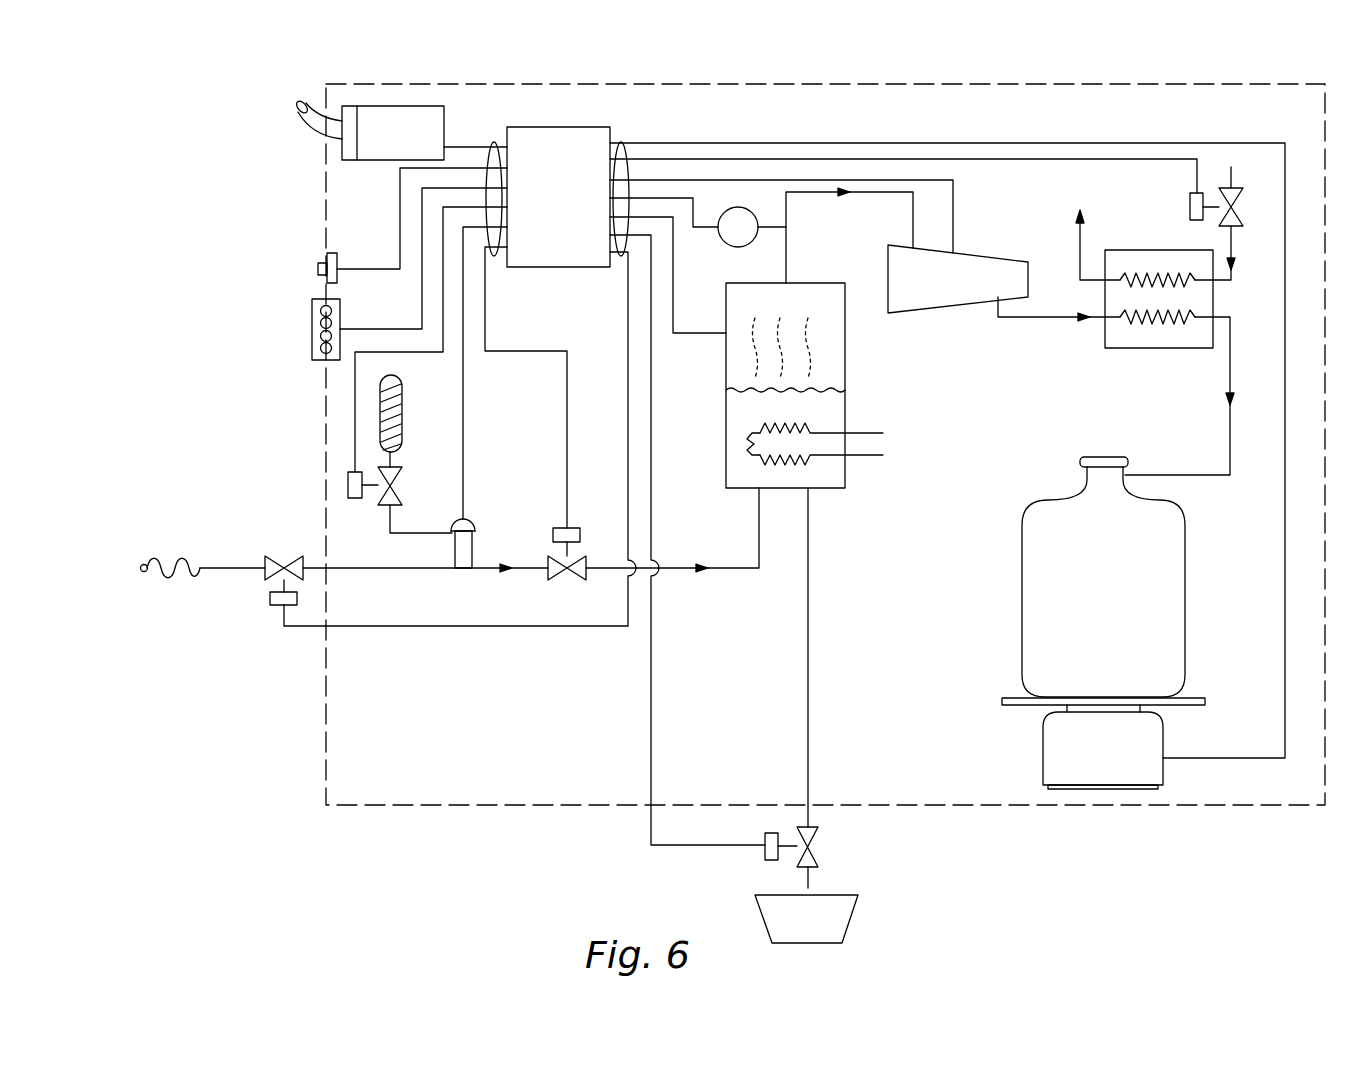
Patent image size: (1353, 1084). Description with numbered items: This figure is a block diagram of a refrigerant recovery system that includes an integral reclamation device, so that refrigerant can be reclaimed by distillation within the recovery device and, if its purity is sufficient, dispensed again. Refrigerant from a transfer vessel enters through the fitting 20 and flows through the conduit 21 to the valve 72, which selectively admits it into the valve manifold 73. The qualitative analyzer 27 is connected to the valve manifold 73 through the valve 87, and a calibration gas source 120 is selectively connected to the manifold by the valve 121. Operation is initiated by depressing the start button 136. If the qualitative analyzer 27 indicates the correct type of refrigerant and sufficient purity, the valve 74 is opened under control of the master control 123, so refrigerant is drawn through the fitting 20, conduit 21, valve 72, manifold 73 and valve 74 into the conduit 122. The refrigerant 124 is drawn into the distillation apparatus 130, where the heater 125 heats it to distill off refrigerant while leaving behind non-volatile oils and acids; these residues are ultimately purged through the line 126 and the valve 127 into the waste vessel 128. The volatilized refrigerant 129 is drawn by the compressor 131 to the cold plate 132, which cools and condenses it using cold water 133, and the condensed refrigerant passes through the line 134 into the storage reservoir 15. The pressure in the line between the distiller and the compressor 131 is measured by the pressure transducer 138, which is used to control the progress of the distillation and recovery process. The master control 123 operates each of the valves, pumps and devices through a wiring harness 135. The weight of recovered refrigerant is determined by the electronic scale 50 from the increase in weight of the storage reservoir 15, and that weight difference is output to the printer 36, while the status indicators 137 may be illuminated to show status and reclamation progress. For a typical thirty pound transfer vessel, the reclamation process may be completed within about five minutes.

The storage reservoir 15 is at (1092, 624).
The fitting 20 is at (144, 573).
The conduit 21 is at (222, 575).
The qualitative analyzer 27 is at (471, 516).
The printer 36 is at (384, 161).
The electronic scale 50 is at (1092, 766).
The valve 72 is at (262, 588).
The valve manifold 73 is at (472, 558).
The valve 74 is at (558, 580).
The valve 87 is at (458, 538).
The calibration gas source 120 is at (402, 405).
The valve 121 is at (402, 478).
The conduit 122 is at (671, 570).
The master control 123 is at (544, 237).
The refrigerant 124 is at (769, 417).
The heater 125 is at (866, 433).
The line 126 is at (808, 590).
The valve 127 is at (815, 848).
The waste vessel 128 is at (856, 920).
The volatilized refrigerant 129 is at (835, 361).
The distillation apparatus 130 is at (845, 397).
The compressor 131 is at (958, 300).
The cold plate 132 is at (1155, 337).
The cold water 133 is at (1233, 238).
The line 134 is at (786, 258).
The wiring harness 135 is at (494, 260).
The start button 136 is at (318, 270).
The status indicators 137 is at (312, 338).
The pressure transducer 138 is at (719, 234).